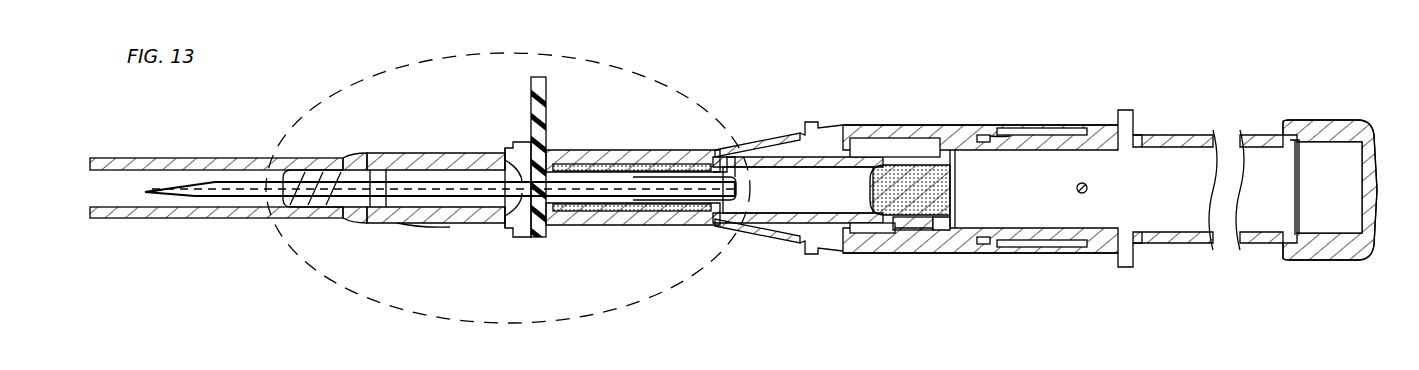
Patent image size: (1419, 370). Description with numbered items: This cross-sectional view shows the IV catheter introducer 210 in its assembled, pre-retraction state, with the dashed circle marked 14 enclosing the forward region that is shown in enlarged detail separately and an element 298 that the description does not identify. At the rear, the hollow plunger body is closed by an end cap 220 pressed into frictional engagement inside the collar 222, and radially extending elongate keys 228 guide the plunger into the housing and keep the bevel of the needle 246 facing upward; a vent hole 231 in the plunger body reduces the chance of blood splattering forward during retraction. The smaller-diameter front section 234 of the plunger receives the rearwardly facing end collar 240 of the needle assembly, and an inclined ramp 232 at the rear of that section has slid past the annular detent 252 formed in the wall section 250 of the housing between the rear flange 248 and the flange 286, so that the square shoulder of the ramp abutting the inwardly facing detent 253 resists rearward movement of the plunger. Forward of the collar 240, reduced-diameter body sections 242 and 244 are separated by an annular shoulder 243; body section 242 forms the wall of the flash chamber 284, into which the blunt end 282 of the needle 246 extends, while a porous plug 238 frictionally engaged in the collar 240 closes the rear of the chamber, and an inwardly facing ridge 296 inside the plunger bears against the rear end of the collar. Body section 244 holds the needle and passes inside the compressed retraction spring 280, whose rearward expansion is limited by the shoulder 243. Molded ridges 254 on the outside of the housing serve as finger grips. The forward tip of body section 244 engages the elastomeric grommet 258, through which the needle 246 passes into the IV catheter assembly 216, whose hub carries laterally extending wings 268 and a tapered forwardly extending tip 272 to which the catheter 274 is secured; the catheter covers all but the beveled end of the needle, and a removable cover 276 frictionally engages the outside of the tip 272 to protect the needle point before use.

The detail view reference 14 is at (540, 325).
The IV catheter introducer 210 is at (856, 70).
The IV catheter assembly 216 is at (460, 126).
The end cap 220 is at (1372, 222).
The collar 222 is at (1308, 122).
The keys 228 is at (1126, 112).
The vent hole 231 is at (1088, 185).
The inclined ramp 232 is at (983, 135).
The front section 234 is at (910, 140).
The plug 238 is at (930, 192).
The end collar 240 is at (918, 232).
The body section 242 is at (872, 230).
The annular shoulder 243 is at (700, 213).
The body section 244 is at (620, 214).
The needle 246 is at (147, 191).
The rear flange 248 is at (1136, 112).
The wall section 250 is at (867, 253).
The annular detent 252 is at (1030, 128).
The inwardly facing detent 253 is at (995, 138).
The molded ridges 254 is at (590, 228).
The elastomeric grommet 258 is at (562, 118).
The wings 268 is at (425, 228).
The tip 272 is at (310, 208).
The catheter 274 is at (232, 181).
The cover 276 is at (195, 219).
The retraction spring 280 is at (615, 165).
The blunt end 282 is at (782, 247).
The flash chamber 284 is at (858, 198).
The flange 286 is at (817, 122).
The inwardly facing ridge 296 is at (948, 222).
The piston face 298 is at (952, 150).